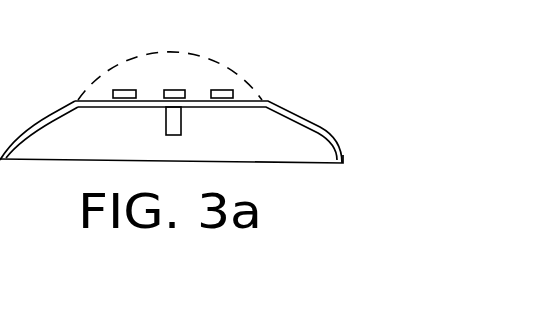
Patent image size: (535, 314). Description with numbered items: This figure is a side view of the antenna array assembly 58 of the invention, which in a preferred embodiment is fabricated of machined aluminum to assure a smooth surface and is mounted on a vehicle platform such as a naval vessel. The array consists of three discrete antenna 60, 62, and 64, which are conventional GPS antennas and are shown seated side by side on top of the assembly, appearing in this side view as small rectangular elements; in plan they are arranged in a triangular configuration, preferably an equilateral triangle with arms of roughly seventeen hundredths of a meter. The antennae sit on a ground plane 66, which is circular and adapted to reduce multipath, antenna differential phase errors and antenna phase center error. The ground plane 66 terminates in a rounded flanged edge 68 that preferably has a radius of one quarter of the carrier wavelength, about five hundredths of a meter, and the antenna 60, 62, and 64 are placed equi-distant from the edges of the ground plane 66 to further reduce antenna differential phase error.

The antenna array assembly 58 is at (287, 54).
The antenna 60 is at (118, 89).
The antenna 62 is at (175, 89).
The antenna 64 is at (226, 94).
The ground plane 66 is at (254, 104).
The rounded flanged edge 68 is at (343, 163).